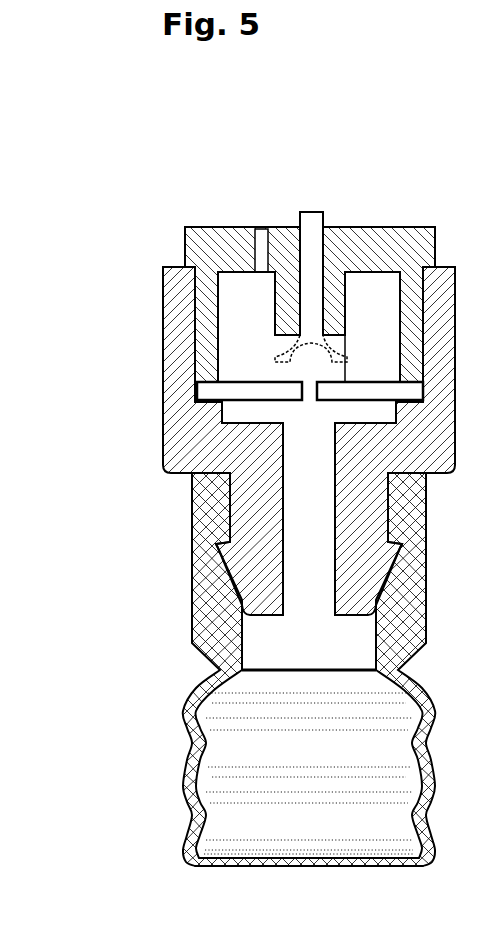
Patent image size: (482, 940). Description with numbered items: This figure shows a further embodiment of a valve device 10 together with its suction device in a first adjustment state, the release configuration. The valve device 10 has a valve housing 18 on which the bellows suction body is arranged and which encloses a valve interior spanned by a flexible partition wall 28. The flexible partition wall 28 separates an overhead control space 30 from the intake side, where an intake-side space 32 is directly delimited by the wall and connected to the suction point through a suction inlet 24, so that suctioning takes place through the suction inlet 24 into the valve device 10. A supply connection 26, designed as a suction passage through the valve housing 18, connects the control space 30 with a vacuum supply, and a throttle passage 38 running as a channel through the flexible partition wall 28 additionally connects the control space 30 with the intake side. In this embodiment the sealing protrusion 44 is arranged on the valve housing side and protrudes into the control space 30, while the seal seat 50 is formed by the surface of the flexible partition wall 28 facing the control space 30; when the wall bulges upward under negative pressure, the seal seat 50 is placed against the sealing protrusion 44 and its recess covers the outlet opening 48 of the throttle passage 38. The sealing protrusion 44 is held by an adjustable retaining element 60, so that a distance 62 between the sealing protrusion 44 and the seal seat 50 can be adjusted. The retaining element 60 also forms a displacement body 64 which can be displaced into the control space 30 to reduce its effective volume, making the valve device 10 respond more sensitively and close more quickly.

The valve device 10 is at (132, 192).
The valve housing 18 is at (175, 252).
The suction inlet 24 is at (314, 594).
The supply connection 26 is at (257, 240).
The flexible partition wall 28 is at (225, 423).
The control space 30 is at (365, 288).
The intake-side space 32 is at (348, 412).
The throttle passage 38 is at (310, 404).
The sealing protrusion 44 is at (325, 335).
The outlet opening 48 is at (302, 381).
The seal seat 50 is at (353, 375).
The retaining element 60 is at (310, 230).
The distance 62 is at (255, 381).
The displacement body 64 is at (313, 316).